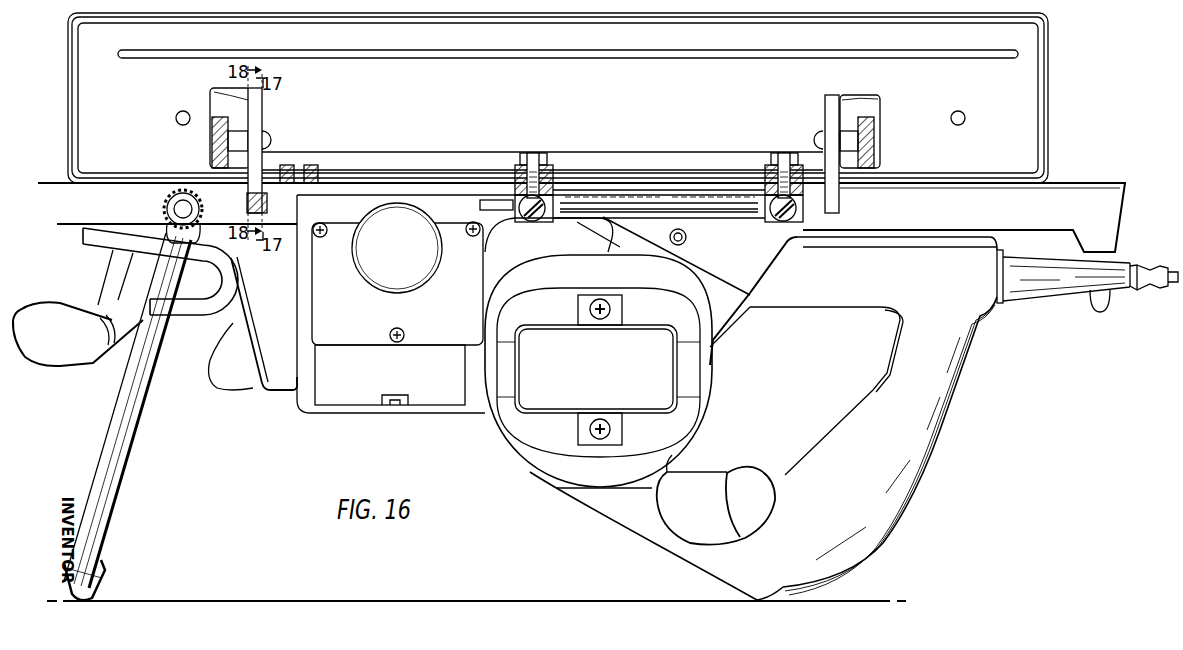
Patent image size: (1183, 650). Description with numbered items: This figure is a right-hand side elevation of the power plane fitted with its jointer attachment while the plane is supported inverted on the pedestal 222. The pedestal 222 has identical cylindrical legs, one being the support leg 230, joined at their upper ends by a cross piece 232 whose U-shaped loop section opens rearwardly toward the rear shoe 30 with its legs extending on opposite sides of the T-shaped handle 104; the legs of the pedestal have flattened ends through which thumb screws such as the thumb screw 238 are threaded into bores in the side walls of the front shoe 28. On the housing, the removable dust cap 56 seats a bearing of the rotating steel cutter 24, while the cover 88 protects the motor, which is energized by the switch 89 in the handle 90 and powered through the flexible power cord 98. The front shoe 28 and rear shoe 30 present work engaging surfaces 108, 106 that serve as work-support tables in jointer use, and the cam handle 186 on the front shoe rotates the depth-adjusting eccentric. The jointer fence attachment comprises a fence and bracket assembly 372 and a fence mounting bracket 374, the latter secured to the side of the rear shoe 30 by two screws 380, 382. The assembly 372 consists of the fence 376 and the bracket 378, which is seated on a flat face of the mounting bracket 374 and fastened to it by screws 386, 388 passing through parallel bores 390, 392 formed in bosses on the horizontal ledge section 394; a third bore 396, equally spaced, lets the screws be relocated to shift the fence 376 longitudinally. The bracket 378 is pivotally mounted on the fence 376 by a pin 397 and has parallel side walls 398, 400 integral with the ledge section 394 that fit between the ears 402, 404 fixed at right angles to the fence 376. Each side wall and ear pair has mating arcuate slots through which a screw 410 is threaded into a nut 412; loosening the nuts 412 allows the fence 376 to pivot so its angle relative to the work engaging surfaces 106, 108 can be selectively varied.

The rotating steel cutter 24 is at (422, 197).
The front shoe 28 is at (55, 208).
The rear shoe 30 is at (1105, 180).
The dust cap 56 is at (397, 304).
The motor cover 88 is at (527, 415).
The switch 89 is at (718, 490).
The handle 90 is at (932, 462).
The flexible power cord 98 is at (1040, 298).
The T-shaped handle 104 is at (40, 352).
The work engaging surface of rear shoe 106 is at (1062, 183).
The work engaging surface of front shoe 108 is at (50, 184).
The cam handle 186 is at (220, 384).
The pedestal 222 is at (140, 446).
The support leg 230 is at (118, 485).
The cross piece 232 is at (84, 236).
The thumb screw 238 is at (164, 210).
The fence and bracket assembly 372 is at (1056, 66).
The fence mounting bracket 374 is at (689, 218).
The fence 376 is at (568, 72).
The bracket 378 is at (410, 152).
The screw 380 is at (783, 222).
The screw 382 is at (530, 222).
The screw 386 is at (763, 157).
The screw 388 is at (548, 157).
The bore 390 is at (765, 170).
The bore 392 is at (553, 170).
The horizontal ledge section 394 is at (472, 182).
The third bore 396 is at (310, 170).
The pin 397 is at (247, 206).
The side wall 398 is at (264, 128).
The side wall 400 is at (818, 128).
The ear 402 is at (212, 92).
The ear 404 is at (846, 100).
The screw 410 is at (271, 141).
The nut 412 is at (212, 140).